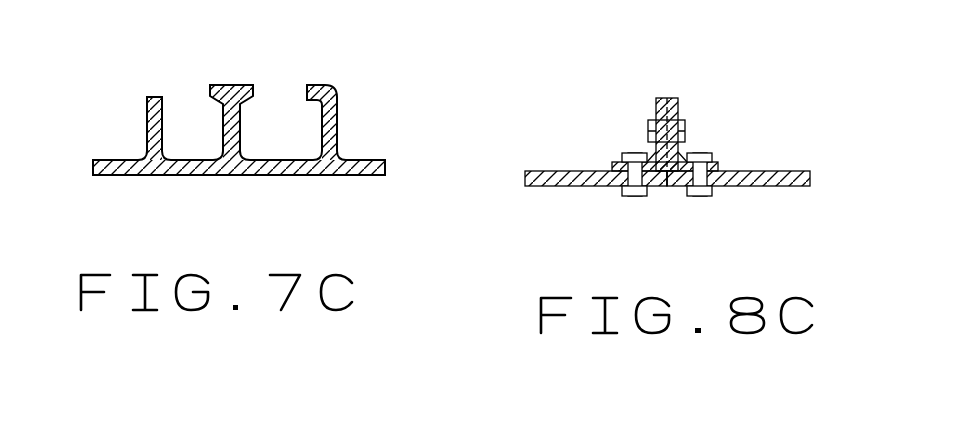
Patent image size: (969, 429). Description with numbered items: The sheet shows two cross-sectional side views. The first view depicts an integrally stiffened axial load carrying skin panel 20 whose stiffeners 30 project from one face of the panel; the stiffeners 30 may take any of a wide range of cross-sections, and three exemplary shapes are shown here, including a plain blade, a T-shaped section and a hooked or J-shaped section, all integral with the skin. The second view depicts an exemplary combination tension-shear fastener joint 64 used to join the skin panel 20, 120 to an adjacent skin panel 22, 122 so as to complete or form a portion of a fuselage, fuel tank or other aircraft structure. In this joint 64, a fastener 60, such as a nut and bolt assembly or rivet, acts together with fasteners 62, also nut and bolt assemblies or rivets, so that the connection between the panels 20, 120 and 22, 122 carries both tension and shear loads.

In FIG. 7C, the skin panel 20 is at (148, 177).
In FIG. 8C, the skin panel 20 is at (562, 208).
In FIG. 7C, the stiffeners 30 is at (147, 117).
In FIG. 8C, the fastener 60 is at (685, 123).
In FIG. 8C, the fasteners 62 is at (674, 199).
In FIG. 8C, the combination tension-shear fastener joint 64 is at (644, 159).
In FIG. 8C, the skin panel 120 is at (568, 187).
In FIG. 8C, the adjacent skin panel 22 is at (767, 206).
In FIG. 8C, the adjacent skin panel 122 is at (757, 188).